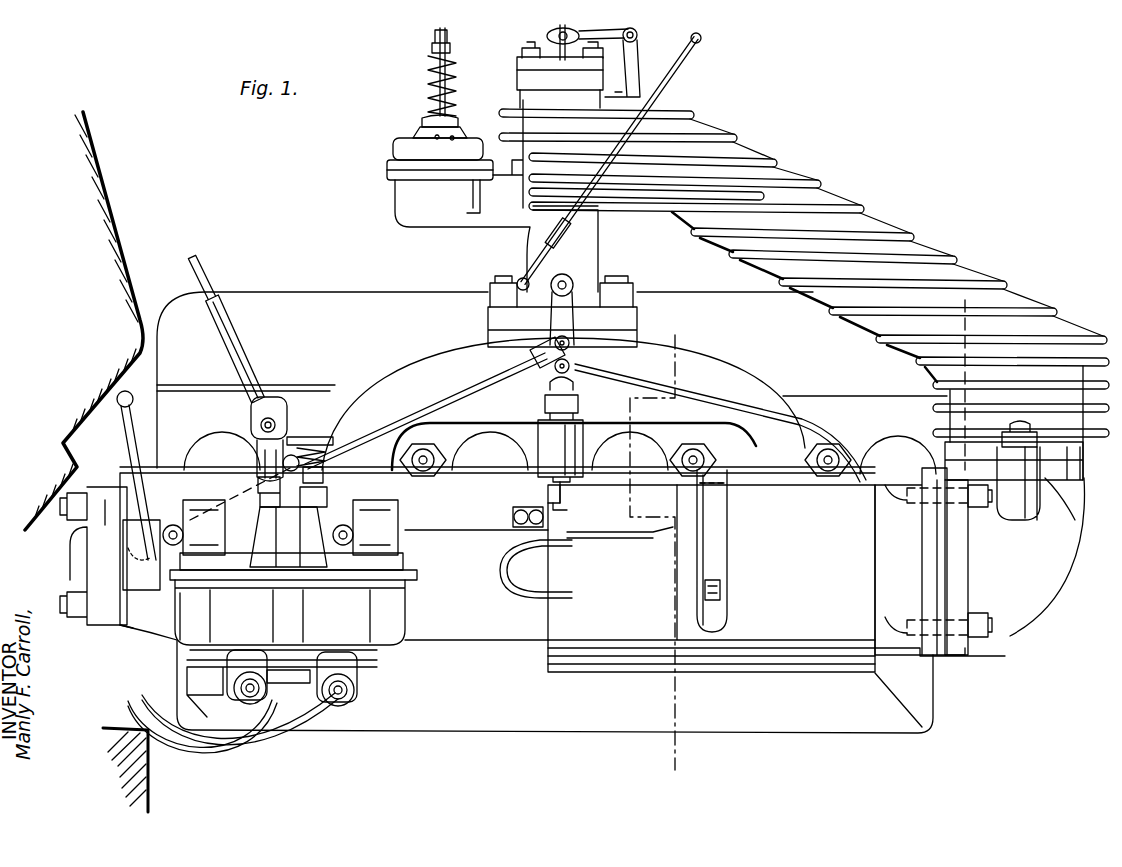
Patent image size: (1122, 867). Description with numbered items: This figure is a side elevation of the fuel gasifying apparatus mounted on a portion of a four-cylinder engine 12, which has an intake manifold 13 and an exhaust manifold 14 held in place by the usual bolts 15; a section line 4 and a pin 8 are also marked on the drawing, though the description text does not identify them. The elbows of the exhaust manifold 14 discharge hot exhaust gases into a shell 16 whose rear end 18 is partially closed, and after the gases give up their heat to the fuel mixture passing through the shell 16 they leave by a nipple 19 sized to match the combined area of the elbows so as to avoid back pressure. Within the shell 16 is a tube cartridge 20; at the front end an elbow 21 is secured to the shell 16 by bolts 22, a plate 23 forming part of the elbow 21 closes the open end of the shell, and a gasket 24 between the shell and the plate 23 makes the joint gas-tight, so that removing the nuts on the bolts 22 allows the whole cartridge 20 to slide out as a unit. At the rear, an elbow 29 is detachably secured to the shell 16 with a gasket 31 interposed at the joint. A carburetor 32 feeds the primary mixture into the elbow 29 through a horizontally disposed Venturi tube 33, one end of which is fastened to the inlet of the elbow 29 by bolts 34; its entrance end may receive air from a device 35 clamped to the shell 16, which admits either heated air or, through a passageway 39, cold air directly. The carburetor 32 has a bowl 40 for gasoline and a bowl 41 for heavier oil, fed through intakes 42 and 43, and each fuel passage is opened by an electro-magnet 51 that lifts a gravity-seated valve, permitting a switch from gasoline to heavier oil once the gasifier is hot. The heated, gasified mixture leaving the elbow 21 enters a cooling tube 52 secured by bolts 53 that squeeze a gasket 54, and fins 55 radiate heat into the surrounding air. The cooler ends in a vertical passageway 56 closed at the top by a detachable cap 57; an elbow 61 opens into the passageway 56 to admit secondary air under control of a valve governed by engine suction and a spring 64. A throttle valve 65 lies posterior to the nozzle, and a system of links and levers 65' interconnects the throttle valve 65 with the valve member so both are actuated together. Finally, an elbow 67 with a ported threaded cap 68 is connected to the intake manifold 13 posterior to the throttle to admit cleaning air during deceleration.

The section line 4 is at (654, 550).
The pin 8 is at (545, 500).
The engine 12 is at (688, 304).
The intake manifold 13 is at (740, 387).
The exhaust manifold 14 is at (212, 443).
The bolts 15 is at (826, 474).
The shell 16 is at (458, 641).
The rear end of shell 18 is at (130, 628).
The nipple 19 is at (203, 653).
The cartridge 20 is at (1007, 637).
The elbow 21 is at (1013, 590).
The bolts 22 is at (984, 510).
The plate 23 is at (953, 657).
The gasket 24 is at (943, 562).
The elbow 29 is at (83, 543).
The gasket 31 is at (46, 497).
The carburetor 32 is at (340, 622).
The Venturi tube 33 is at (245, 555).
The bolts 34 is at (110, 556).
The device 35 is at (786, 628).
The passageway 39 is at (540, 563).
The bowl 40 is at (382, 607).
The bowl 41 is at (182, 603).
The intake 42 is at (343, 522).
The intake 43 is at (172, 522).
The electro-magnet 51 is at (362, 668).
The cooling tube 52 is at (953, 273).
The bolts 53 is at (1025, 422).
The gasket 54 is at (1050, 493).
The fins 55 is at (907, 233).
The vertical passageway 56 is at (600, 230).
The cap 57 is at (553, 62).
The elbow 61 is at (412, 226).
The spring 64 is at (430, 100).
The throttle valve 65 is at (581, 303).
The system of links and levers 65' is at (625, 159).
The elbow 67 is at (573, 377).
The ported threaded cap 68 is at (572, 430).